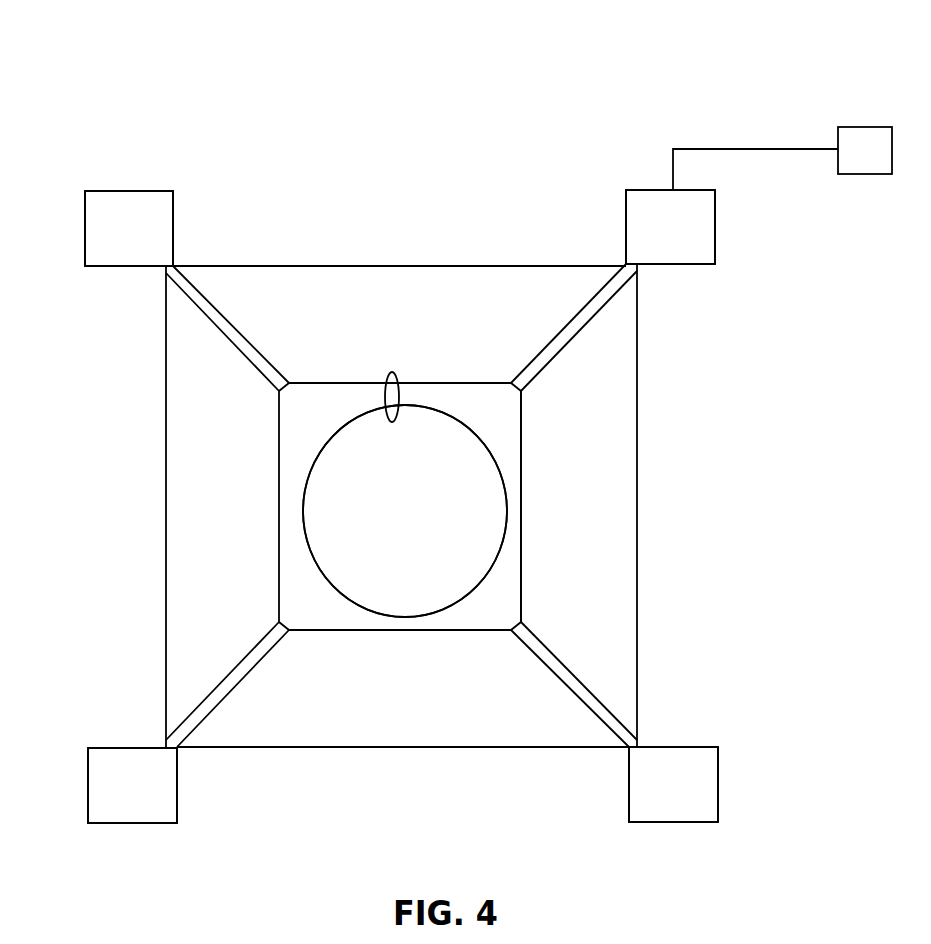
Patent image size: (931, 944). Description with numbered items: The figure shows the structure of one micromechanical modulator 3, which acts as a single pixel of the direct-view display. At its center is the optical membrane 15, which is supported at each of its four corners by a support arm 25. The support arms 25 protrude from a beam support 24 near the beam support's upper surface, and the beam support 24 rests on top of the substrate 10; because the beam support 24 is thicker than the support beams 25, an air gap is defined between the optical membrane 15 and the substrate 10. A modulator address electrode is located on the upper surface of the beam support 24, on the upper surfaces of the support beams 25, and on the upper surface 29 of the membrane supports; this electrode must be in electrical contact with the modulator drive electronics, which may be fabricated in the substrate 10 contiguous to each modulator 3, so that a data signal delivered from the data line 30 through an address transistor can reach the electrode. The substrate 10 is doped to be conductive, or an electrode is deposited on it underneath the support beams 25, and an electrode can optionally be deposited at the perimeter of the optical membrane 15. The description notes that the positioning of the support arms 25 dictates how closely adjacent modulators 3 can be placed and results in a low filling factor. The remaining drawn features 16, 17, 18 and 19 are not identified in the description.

The micromechanical modulator 3 is at (190, 88).
The substrate 10 is at (380, 728).
The optical membrane 15 is at (508, 433).
The membrane 16 is at (332, 488).
The slot 17 is at (388, 372).
The inner frame side 18 is at (522, 490).
The circular opening 19 is at (505, 487).
The beam support 24 is at (125, 191).
The support arm 25 is at (233, 323).
The upper surface of membrane supports 29 is at (865, 127).
The data line 30 is at (103, 224).